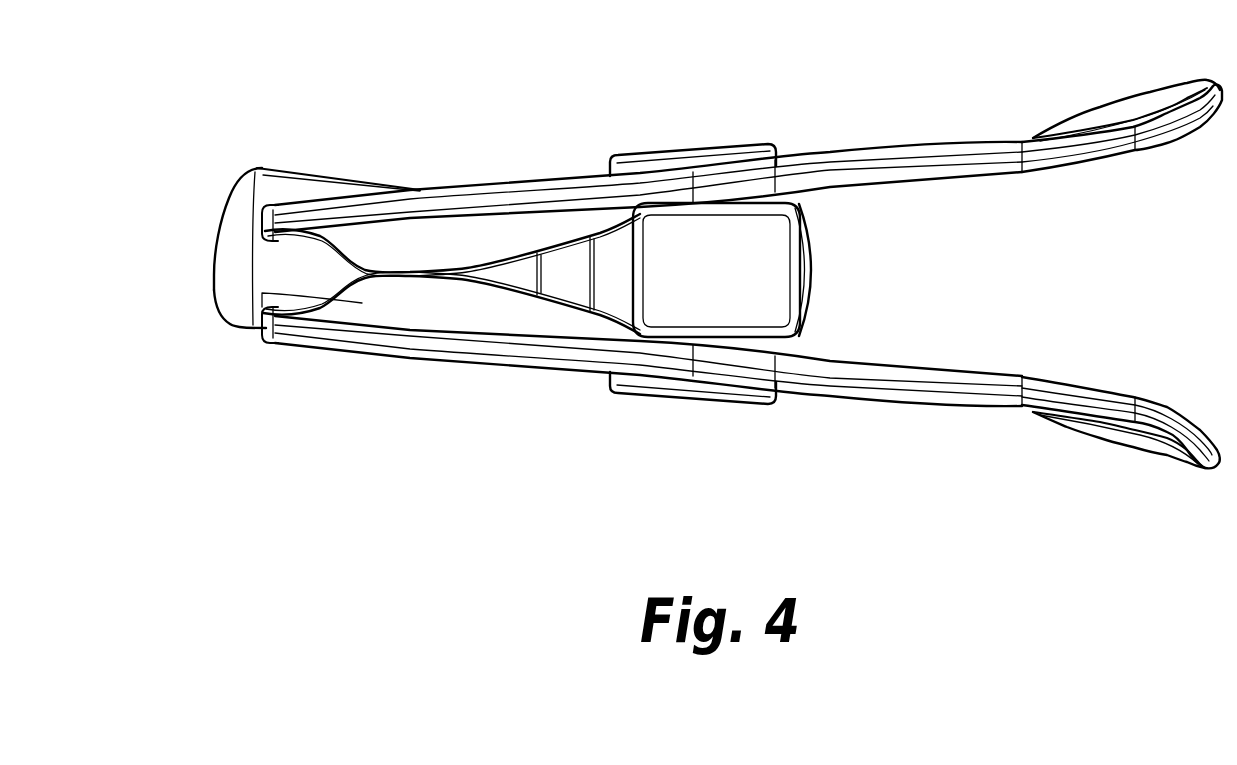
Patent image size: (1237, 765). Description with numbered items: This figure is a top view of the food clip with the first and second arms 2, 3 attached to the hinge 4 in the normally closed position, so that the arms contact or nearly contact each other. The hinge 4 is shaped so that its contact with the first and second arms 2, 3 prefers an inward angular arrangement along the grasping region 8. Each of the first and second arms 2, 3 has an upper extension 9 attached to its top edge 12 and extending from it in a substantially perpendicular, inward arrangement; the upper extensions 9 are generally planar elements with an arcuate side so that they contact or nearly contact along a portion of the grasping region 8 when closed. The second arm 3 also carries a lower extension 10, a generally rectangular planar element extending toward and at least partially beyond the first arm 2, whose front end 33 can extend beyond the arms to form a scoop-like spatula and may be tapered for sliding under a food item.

The first arm 2 is at (887, 148).
The second arm 3 is at (880, 398).
The hinge 4 is at (812, 270).
The grasping region 8 is at (587, 450).
The upper extension 9 is at (420, 230).
The lower extension 10 is at (247, 197).
The top edge 12 is at (287, 207).
The front end 33 is at (223, 318).